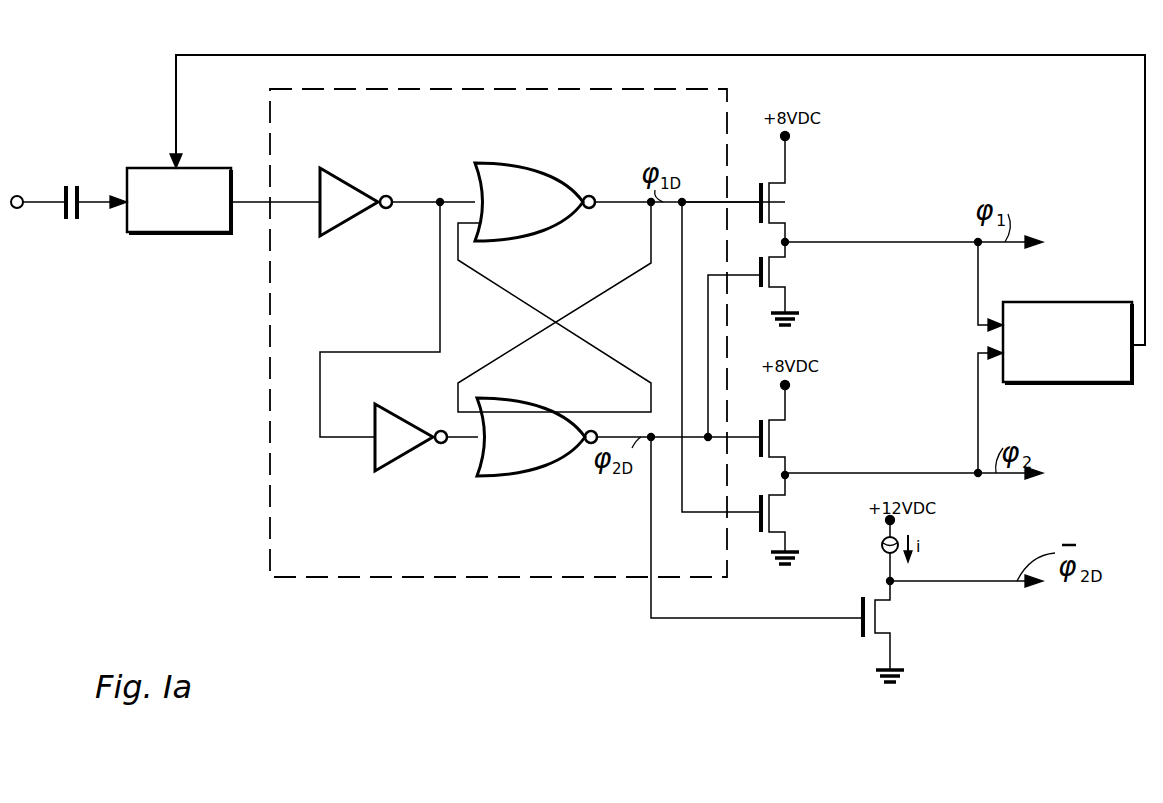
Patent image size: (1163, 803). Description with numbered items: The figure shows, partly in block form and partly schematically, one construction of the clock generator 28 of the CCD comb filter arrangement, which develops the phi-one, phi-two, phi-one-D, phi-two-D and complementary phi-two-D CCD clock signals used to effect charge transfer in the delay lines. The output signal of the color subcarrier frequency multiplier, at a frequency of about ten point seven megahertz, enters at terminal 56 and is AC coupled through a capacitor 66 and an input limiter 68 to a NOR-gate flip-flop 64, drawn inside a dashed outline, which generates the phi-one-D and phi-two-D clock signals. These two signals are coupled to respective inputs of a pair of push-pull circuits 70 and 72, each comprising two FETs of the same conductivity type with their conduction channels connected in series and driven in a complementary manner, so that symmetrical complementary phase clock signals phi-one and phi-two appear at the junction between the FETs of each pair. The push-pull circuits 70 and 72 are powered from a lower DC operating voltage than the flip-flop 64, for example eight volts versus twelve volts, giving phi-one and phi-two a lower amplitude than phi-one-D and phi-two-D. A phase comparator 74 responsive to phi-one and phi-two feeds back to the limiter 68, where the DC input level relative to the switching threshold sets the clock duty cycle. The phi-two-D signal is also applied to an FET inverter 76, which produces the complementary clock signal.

The clock generator 28 is at (583, 50).
The terminal 56 is at (20, 208).
The capacitor 66 is at (80, 160).
The input limiter 68 is at (168, 234).
The NOR-gate flip-flop 64 is at (268, 506).
The push-pull circuit 70 is at (848, 223).
The push-pull circuit 72 is at (843, 459).
The phase comparator 74 is at (1116, 384).
The FET inverter 76 is at (886, 616).